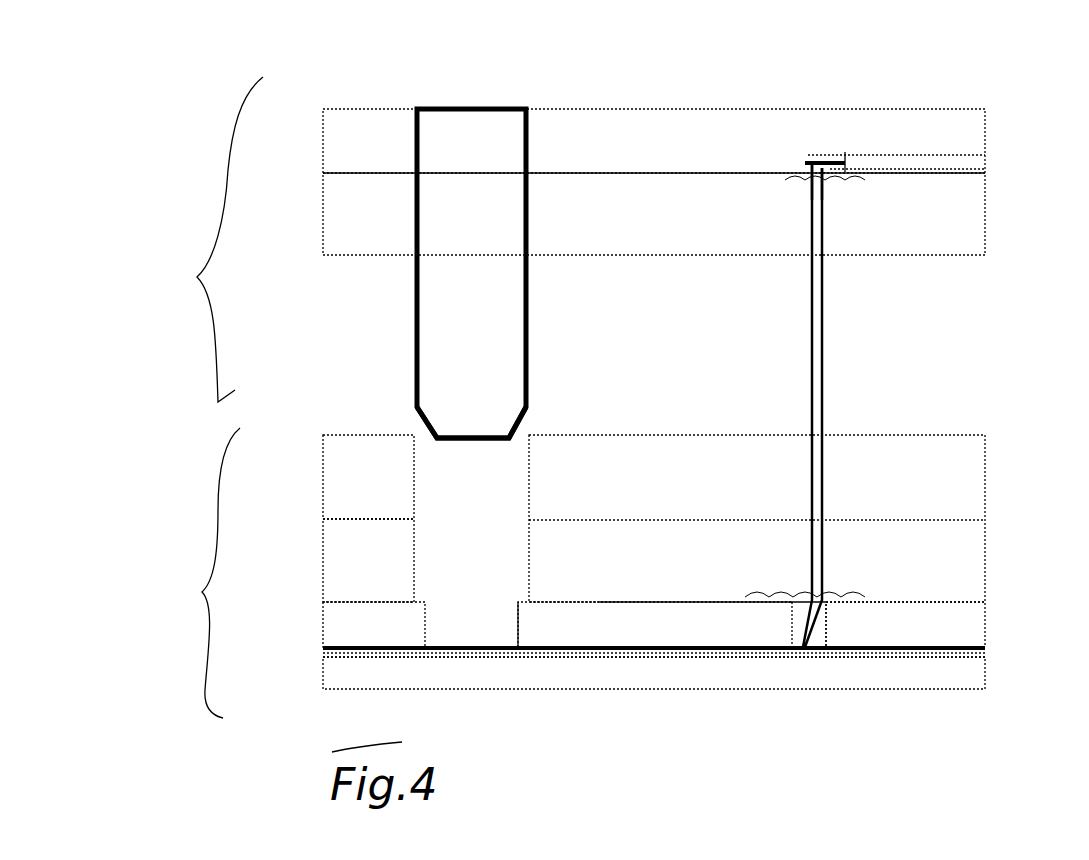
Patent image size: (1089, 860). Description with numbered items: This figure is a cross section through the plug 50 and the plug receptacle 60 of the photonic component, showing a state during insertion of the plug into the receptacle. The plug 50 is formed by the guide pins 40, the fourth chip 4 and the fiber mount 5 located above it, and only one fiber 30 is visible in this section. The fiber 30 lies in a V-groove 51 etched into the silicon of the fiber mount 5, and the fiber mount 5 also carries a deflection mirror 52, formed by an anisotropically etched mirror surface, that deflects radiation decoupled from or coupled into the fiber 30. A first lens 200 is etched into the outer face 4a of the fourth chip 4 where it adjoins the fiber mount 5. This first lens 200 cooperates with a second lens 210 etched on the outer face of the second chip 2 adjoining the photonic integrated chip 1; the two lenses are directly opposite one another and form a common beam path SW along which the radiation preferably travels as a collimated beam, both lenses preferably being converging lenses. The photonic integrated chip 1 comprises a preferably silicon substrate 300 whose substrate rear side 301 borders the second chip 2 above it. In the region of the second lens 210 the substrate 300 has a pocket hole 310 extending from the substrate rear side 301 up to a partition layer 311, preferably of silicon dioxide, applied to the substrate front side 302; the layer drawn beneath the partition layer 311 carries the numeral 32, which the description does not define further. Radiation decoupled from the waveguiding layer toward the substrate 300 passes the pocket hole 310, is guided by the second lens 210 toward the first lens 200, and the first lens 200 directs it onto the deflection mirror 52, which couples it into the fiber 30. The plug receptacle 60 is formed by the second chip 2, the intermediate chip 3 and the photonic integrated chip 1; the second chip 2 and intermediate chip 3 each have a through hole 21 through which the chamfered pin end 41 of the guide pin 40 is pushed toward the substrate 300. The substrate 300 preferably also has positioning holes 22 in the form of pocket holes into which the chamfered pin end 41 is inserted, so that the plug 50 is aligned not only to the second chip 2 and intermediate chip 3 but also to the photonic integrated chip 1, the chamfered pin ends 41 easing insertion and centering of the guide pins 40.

The plug 50 is at (203, 239).
The fiber mount 5 is at (323, 132).
The fourth chip 4 is at (323, 222).
The outer face of the fourth chip 4a is at (637, 175).
The guide pin 40 is at (462, 135).
The chamfered pin end 41 is at (432, 417).
The fiber 30 is at (985, 155).
The deflection mirror 52 is at (805, 160).
The V-groove 51 is at (833, 153).
The first lens 200 is at (824, 190).
The beam path SW is at (824, 349).
The plug receptacle 60 is at (176, 573).
The intermediate chip 3 is at (323, 478).
The second chip 2 is at (323, 565).
The photonic integrated chip 1 is at (322, 630).
The through hole 21 is at (502, 486).
The positioning hole 22 is at (493, 630).
The substrate front side 302 is at (641, 647).
The pocket hole 310 is at (792, 618).
The second lens 210 is at (828, 582).
The substrate rear side 301 is at (955, 601).
The substrate 300 is at (975, 620).
The partition layer 311 is at (985, 651).
The substrate 32 is at (985, 657).